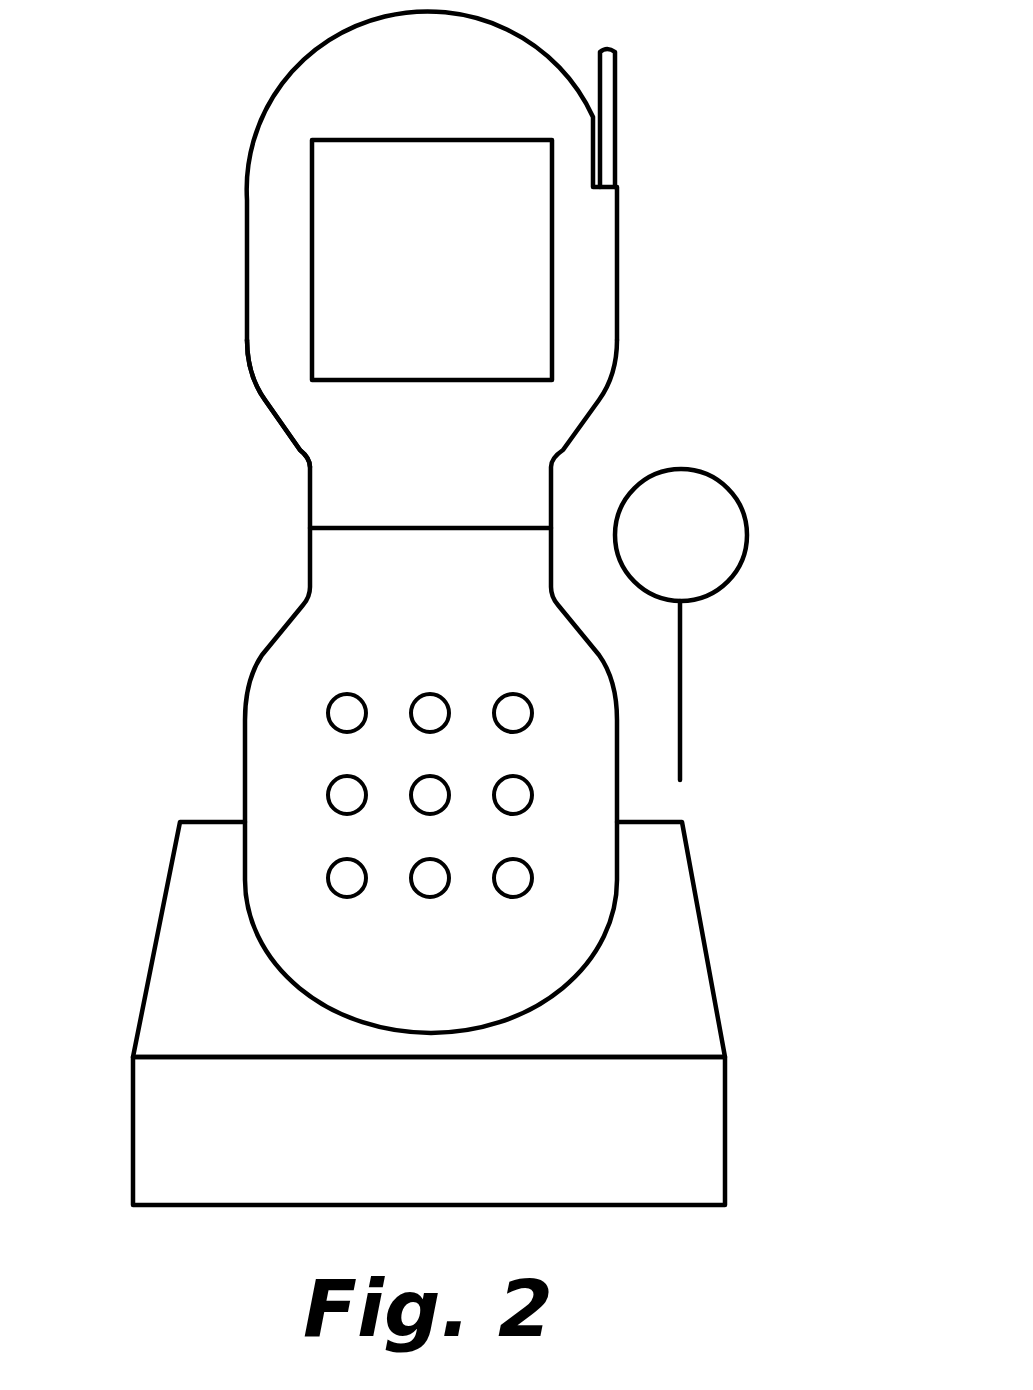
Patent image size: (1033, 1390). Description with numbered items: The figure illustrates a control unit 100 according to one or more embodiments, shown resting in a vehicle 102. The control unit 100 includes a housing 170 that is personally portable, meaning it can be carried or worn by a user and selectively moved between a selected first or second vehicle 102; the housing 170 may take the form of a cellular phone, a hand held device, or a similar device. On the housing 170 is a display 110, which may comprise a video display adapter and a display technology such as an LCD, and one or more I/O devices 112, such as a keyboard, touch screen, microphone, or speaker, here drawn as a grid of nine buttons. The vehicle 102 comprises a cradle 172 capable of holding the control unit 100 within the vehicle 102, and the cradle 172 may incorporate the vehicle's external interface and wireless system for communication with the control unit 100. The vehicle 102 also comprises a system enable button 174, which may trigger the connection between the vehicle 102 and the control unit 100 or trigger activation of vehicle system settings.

The control unit 100 is at (287, 91).
The display 110 is at (552, 272).
The housing 170 is at (251, 373).
The I/O device 112 is at (327, 710).
The system enable button 174 is at (712, 515).
The vehicle 102 is at (697, 878).
The cradle 172 is at (663, 1110).